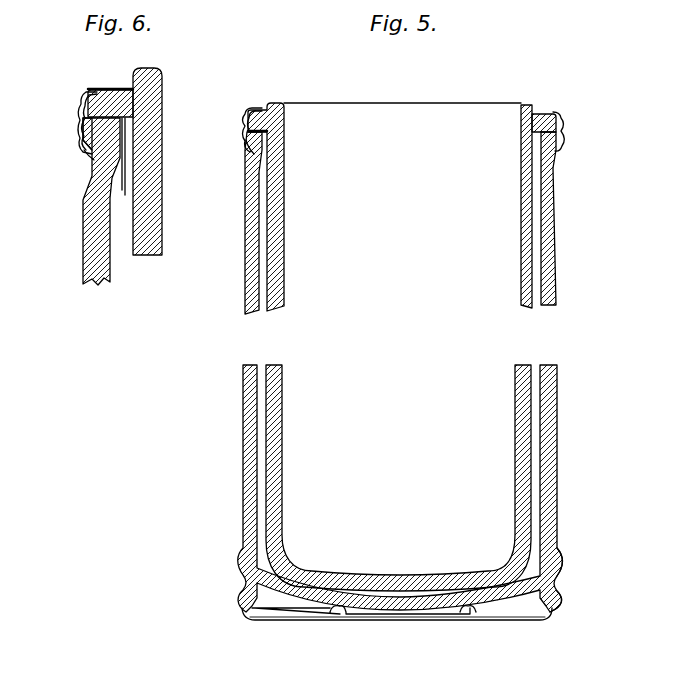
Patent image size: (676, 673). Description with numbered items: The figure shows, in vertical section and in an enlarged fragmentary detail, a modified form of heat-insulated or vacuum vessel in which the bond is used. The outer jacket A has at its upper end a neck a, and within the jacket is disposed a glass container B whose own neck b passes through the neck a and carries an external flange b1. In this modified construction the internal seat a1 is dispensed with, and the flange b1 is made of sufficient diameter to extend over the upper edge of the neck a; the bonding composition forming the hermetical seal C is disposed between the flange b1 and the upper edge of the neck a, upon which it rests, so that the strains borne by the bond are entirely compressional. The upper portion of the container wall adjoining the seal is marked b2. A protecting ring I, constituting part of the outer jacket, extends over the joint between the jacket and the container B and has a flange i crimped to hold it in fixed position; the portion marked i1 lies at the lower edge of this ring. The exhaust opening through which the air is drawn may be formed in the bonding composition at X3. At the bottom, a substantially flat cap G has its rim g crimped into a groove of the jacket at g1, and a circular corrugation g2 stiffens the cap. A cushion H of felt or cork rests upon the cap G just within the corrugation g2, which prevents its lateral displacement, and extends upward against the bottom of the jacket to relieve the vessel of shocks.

In FIG. 6, the outer jacket A is at (83, 237).
In FIG. 5, the outer jacket A is at (557, 238).
In FIG. 6, the container B is at (127, 150).
In FIG. 5, the container B is at (521, 238).
In FIG. 6, the neck a is at (96, 158).
In FIG. 5, the neck a is at (558, 153).
In FIG. 6, the internal seat a1 is at (82, 134).
In FIG. 5, the internal seat a1 is at (564, 130).
In FIG. 6, the neck b is at (162, 237).
In FIG. 5, the neck b is at (521, 133).
In FIG. 6, the external flange b1 is at (88, 89).
In FIG. 5, the external flange b1 is at (541, 104).
In FIG. 5, the upper wall portion of inner receptacle b2 is at (283, 102).
In FIG. 6, the hermetical seal C is at (86, 124).
In FIG. 5, the hermetical seal C is at (245, 113).
In FIG. 6, the flange i is at (80, 110).
In FIG. 5, the flange i is at (244, 121).
In FIG. 6, the protecting ring I is at (88, 89).
In FIG. 5, the protecting ring I is at (243, 134).
In FIG. 6, the lower edge of sealing cap i1 is at (88, 158).
In FIG. 5, the lower edge of sealing cap i1 is at (246, 143).
In FIG. 5, the rim g is at (562, 594).
In FIG. 5, the crimp g1 is at (561, 557).
In FIG. 5, the circular corrugation g2 is at (470, 619).
In FIG. 5, the cap G is at (551, 616).
In FIG. 5, the cushion H is at (343, 619).
In FIG. 6, the exhaust opening X3 is at (122, 169).